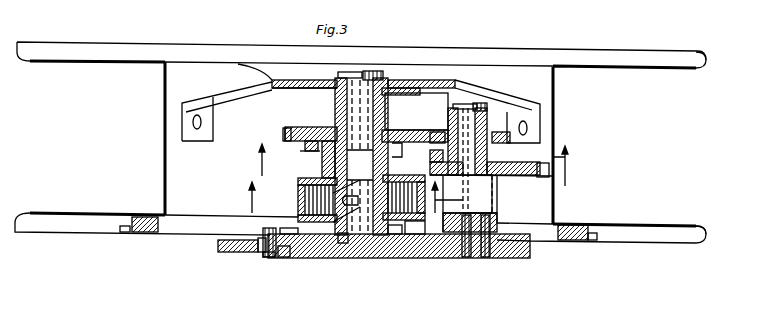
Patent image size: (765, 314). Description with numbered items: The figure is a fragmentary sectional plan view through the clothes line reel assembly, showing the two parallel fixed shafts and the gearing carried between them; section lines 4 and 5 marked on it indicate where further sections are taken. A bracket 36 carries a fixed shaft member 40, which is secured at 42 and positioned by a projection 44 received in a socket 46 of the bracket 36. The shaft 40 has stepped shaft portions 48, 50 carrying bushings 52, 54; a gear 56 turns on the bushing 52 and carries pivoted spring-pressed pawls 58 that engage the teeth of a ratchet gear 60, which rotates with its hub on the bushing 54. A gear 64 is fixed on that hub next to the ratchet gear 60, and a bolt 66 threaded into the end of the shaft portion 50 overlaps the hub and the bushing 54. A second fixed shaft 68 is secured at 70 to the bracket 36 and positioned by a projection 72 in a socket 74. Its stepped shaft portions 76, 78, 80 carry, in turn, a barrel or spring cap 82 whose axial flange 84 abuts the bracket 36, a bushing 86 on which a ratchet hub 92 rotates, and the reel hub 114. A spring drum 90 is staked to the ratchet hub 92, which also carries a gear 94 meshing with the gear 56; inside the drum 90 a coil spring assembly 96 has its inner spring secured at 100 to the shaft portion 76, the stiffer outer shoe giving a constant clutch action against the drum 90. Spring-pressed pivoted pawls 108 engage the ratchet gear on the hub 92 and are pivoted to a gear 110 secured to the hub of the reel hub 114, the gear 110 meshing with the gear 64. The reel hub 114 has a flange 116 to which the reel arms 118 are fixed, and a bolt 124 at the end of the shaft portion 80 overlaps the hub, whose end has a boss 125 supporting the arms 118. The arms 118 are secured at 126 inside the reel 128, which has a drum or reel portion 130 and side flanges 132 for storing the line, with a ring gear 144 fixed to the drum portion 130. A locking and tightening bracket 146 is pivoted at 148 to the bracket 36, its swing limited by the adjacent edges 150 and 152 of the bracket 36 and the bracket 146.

The section line 4 is at (410, 165).
The section line 5 is at (346, 197).
The bracket 36 is at (530, 257).
The fixed shaft member 40 is at (497, 213).
The securing point of shaft 40 42 is at (452, 258).
The projection 44 is at (465, 258).
The socket 46 is at (485, 258).
The stepped shaft portion 48 is at (448, 190).
The stepped shaft portion 50 is at (500, 92).
The bushing 52 is at (493, 183).
The bushing 54 is at (497, 194).
The gear 56 is at (553, 181).
The spring-pressed pawls 58 is at (540, 144).
The ratchet gear 60 is at (497, 132).
The gear 64 is at (453, 105).
The bolt 66 is at (479, 103).
The fixed shaft 68 is at (330, 258).
The securing point of shaft 68 70 is at (383, 258).
The projection 72 is at (355, 258).
The socket 74 is at (363, 258).
The stepped shaft portion 76 is at (393, 258).
The stepped shaft portion 78 is at (361, 156).
The stepped shaft portion 80 is at (388, 87).
The barrel or spring cap 82 is at (413, 258).
The axial flange 84 is at (305, 256).
The bushing 86 is at (337, 120).
The spring drum 90 is at (298, 191).
The ratchet hub 92 is at (298, 180).
The gear 94 is at (297, 160).
The coil spring assembly 96 is at (298, 211).
The securing point of inner coil spring 100 is at (395, 153).
The spring-pressed pivoted pawls 108 is at (300, 134).
The gear 110 is at (303, 146).
The reel hub 114 is at (300, 79).
The flange 116 is at (305, 88).
The reel arms 118 is at (268, 79).
The bolt 124 is at (372, 71).
The boss 125 is at (345, 72).
The securing point of arms 126 is at (193, 122).
The reel 128 is at (553, 200).
The drum or reel portion 130 is at (558, 84).
The side flanges 132 is at (680, 223).
The ring gear 144 is at (580, 240).
The locking and tightening bracket 146 is at (217, 243).
The pivot of bracket 146 148 is at (260, 254).
The edge of bracket 36 150 is at (290, 258).
The edge of bracket 146 152 is at (263, 262).